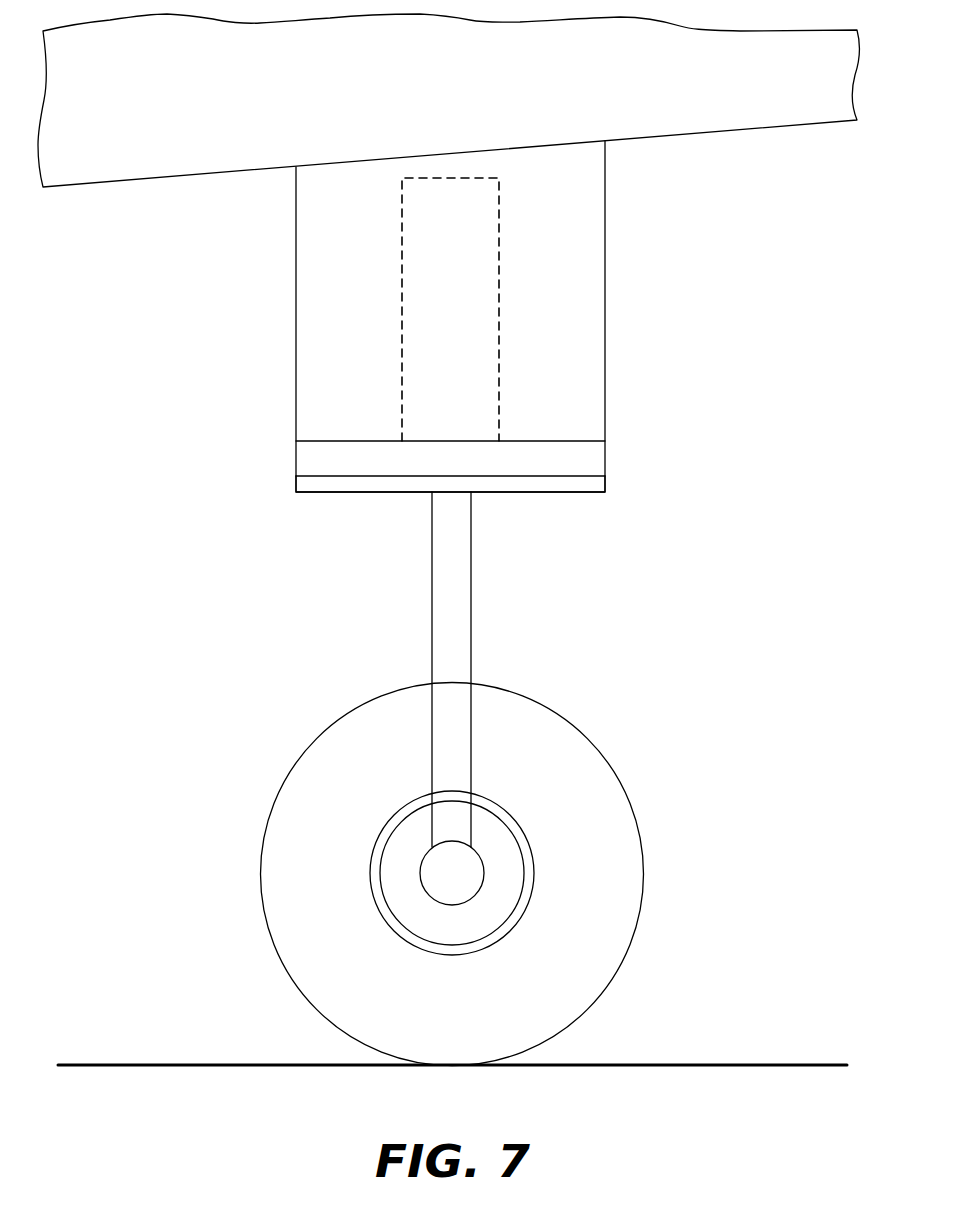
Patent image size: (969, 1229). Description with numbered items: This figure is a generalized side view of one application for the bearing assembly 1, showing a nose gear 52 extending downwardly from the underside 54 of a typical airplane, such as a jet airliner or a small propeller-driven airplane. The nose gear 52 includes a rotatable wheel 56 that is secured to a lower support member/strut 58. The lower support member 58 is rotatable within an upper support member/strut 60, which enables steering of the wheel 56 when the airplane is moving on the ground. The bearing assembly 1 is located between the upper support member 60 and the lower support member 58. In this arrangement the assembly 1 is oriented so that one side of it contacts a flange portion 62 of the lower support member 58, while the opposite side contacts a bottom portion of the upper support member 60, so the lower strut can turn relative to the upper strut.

The underside 54 is at (737, 130).
The upper support member/strut 60 is at (605, 305).
The bearing assembly 1 is at (605, 458).
The flange portion 62 is at (605, 481).
The lower support member/strut 58 is at (458, 597).
The rotatable wheel 56 is at (627, 871).
The nose gear 52 is at (613, 574).